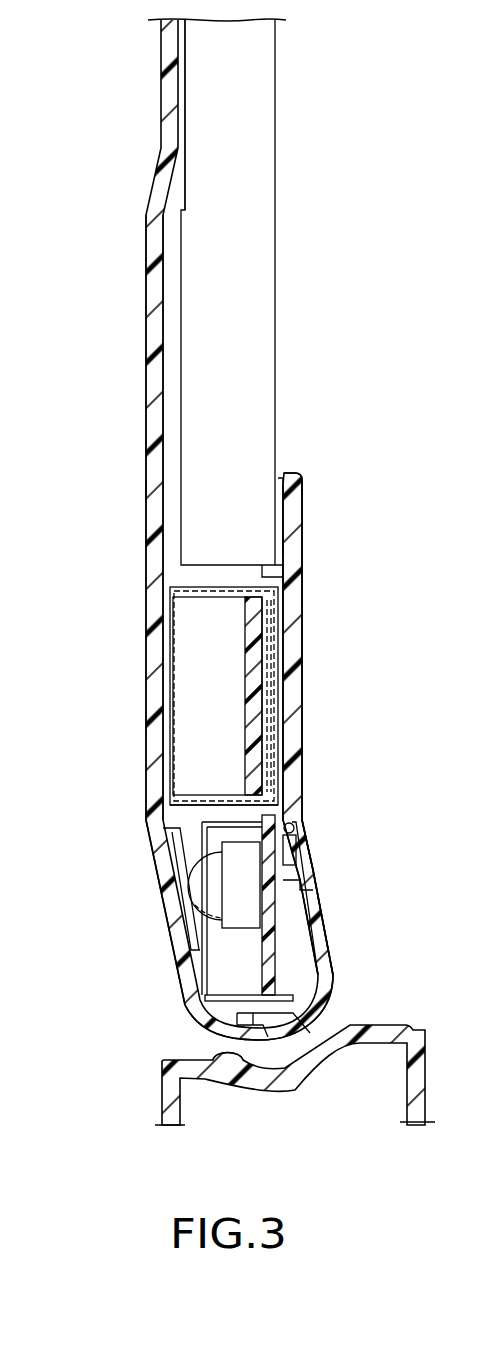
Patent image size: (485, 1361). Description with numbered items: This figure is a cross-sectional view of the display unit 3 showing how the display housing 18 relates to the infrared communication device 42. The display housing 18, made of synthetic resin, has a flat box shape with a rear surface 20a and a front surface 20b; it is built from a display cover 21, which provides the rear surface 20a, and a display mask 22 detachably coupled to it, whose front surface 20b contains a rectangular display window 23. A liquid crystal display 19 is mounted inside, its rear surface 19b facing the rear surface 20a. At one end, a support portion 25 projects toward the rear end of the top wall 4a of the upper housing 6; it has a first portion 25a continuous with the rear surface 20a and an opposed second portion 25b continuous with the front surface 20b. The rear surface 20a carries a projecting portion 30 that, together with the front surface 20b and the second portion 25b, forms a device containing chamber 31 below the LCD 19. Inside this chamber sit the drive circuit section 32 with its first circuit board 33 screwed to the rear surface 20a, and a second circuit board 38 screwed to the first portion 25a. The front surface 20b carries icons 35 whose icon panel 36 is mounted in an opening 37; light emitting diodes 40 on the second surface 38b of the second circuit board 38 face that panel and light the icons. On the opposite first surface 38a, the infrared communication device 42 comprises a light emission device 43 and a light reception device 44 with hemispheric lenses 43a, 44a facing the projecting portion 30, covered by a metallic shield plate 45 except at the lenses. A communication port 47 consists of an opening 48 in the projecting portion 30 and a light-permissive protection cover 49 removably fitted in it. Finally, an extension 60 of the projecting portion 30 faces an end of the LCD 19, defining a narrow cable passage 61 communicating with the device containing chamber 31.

The display unit 3 is at (302, 92).
The top wall 4a is at (222, 1062).
The upper housing 6 is at (308, 1075).
The display housing 18 is at (86, 470).
The liquid crystal display 19 is at (253, 280).
The rear surface 19b is at (181, 110).
The rear surface 20a is at (161, 63).
The front surface 20b is at (303, 612).
The display cover 21 is at (156, 492).
The display mask 22 is at (293, 545).
The display window 23 is at (287, 473).
The support portion 25 is at (293, 1025).
The first portion 25a is at (172, 962).
The second portion 25b is at (326, 936).
The projecting portion 30 is at (224, 697).
The device containing chamber 31 is at (193, 808).
The drive circuit section 32 is at (190, 698).
The first circuit board 33 is at (253, 680).
The icons 35 is at (306, 830).
The icon panel 36 is at (297, 850).
The opening 37 is at (295, 828).
The second circuit board 38 is at (278, 922).
The first surface 38a is at (232, 1020).
The second surface 38b is at (290, 992).
The light emitting diodes 40 is at (291, 880).
The infrared communication device 42 is at (192, 850).
The light emission device 43 is at (138, 886).
The light reception device 44 is at (216, 880).
The hemispheric lens 43a is at (123, 908).
The hemispheric lens 44a is at (210, 897).
The metallic shield plate 45 is at (226, 1040).
The communication port 47 is at (166, 852).
The opening 48 is at (156, 832).
The protection cover 49 is at (174, 928).
The extension 60 is at (146, 297).
The cable passage 61 is at (172, 368).